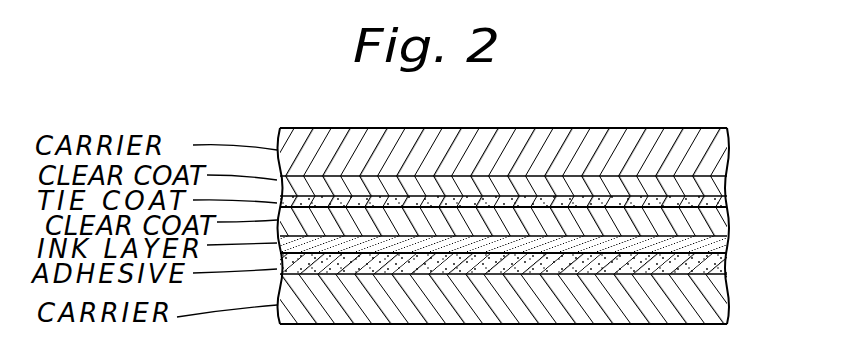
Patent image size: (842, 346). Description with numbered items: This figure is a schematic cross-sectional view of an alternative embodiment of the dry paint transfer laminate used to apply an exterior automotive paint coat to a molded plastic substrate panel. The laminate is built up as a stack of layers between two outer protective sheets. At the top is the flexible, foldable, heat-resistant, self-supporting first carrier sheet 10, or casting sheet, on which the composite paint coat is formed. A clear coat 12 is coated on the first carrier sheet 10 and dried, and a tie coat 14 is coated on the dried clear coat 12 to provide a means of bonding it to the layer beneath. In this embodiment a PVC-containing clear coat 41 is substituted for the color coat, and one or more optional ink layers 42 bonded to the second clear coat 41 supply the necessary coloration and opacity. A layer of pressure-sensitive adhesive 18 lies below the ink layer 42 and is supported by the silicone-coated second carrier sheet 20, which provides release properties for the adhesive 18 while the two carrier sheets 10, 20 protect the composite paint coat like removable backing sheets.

The first carrier sheet 10 is at (727, 160).
The clear coat 12 is at (727, 188).
The tie coat 14 is at (727, 203).
The PVC-containing clear coat 41 is at (727, 225).
The ink layer 42 is at (727, 246).
The pressure-sensitive adhesive 18 is at (727, 263).
The second carrier sheet 20 is at (727, 307).